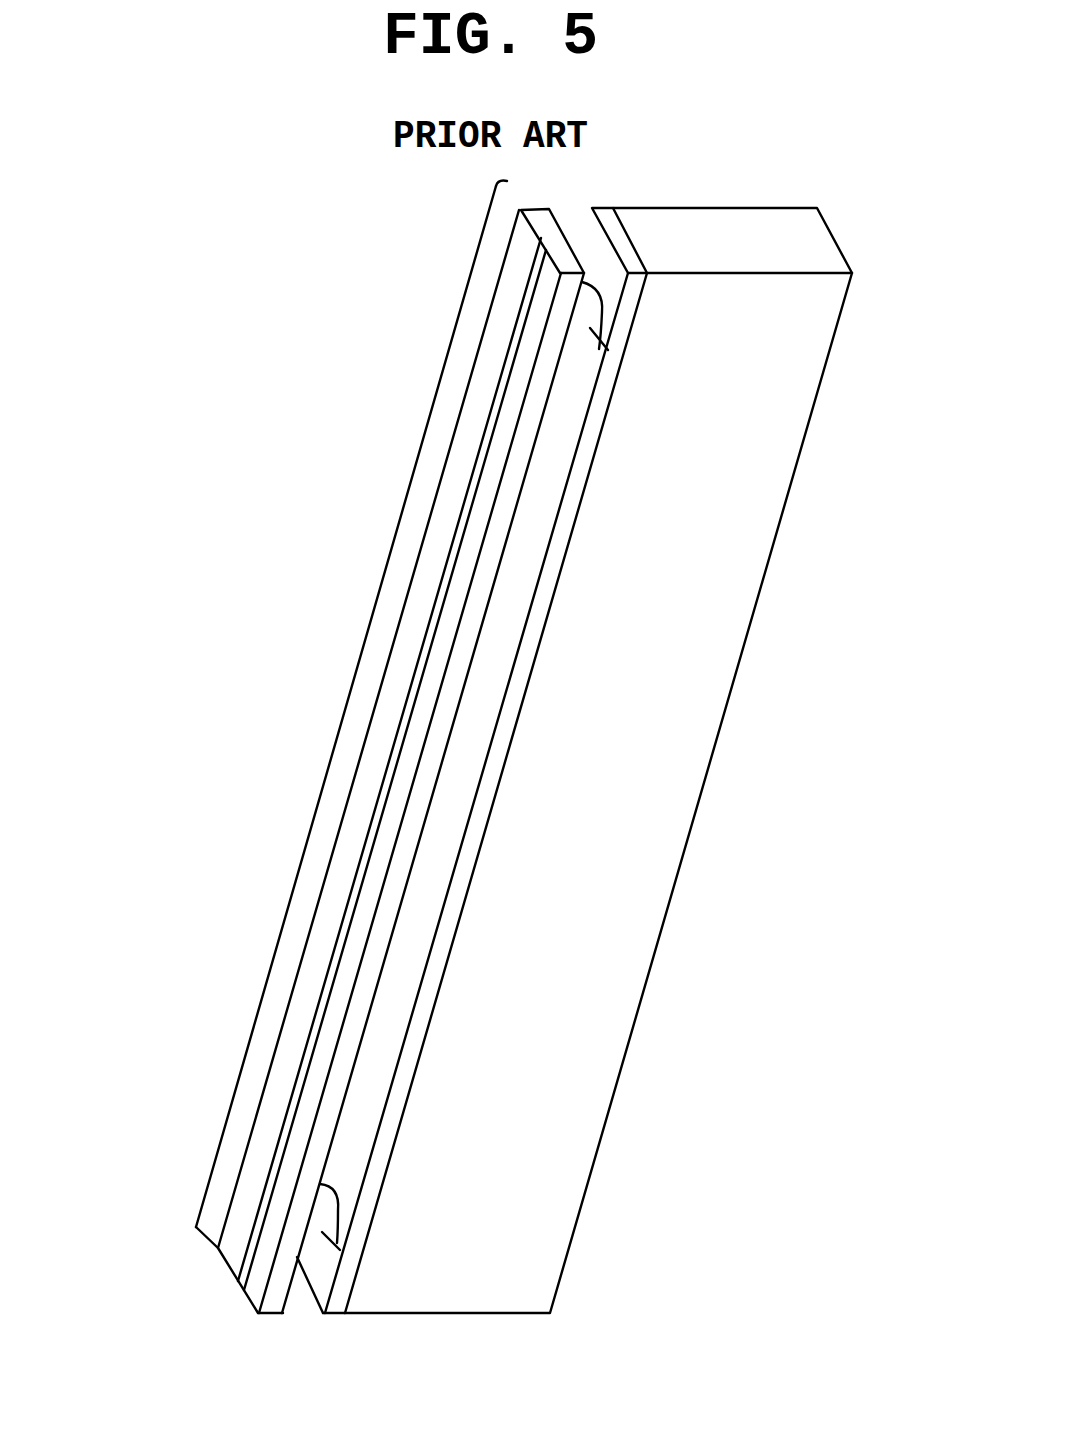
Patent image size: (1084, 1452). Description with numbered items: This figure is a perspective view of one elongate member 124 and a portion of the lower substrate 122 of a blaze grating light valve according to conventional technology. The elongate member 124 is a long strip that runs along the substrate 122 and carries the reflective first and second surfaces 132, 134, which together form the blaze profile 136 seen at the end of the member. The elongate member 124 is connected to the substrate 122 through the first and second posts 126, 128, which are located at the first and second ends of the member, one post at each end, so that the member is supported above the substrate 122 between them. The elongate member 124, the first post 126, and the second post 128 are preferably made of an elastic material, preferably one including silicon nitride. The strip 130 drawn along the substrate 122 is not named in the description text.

The substrate 122 is at (623, 750).
The elongate member 124 is at (353, 668).
The first post 126 is at (302, 1250).
The second post 128 is at (565, 349).
The electrode strip 130 is at (443, 952).
The first surface 132 is at (360, 802).
The second surface 134 is at (435, 668).
The blaze profile 136 is at (212, 1267).